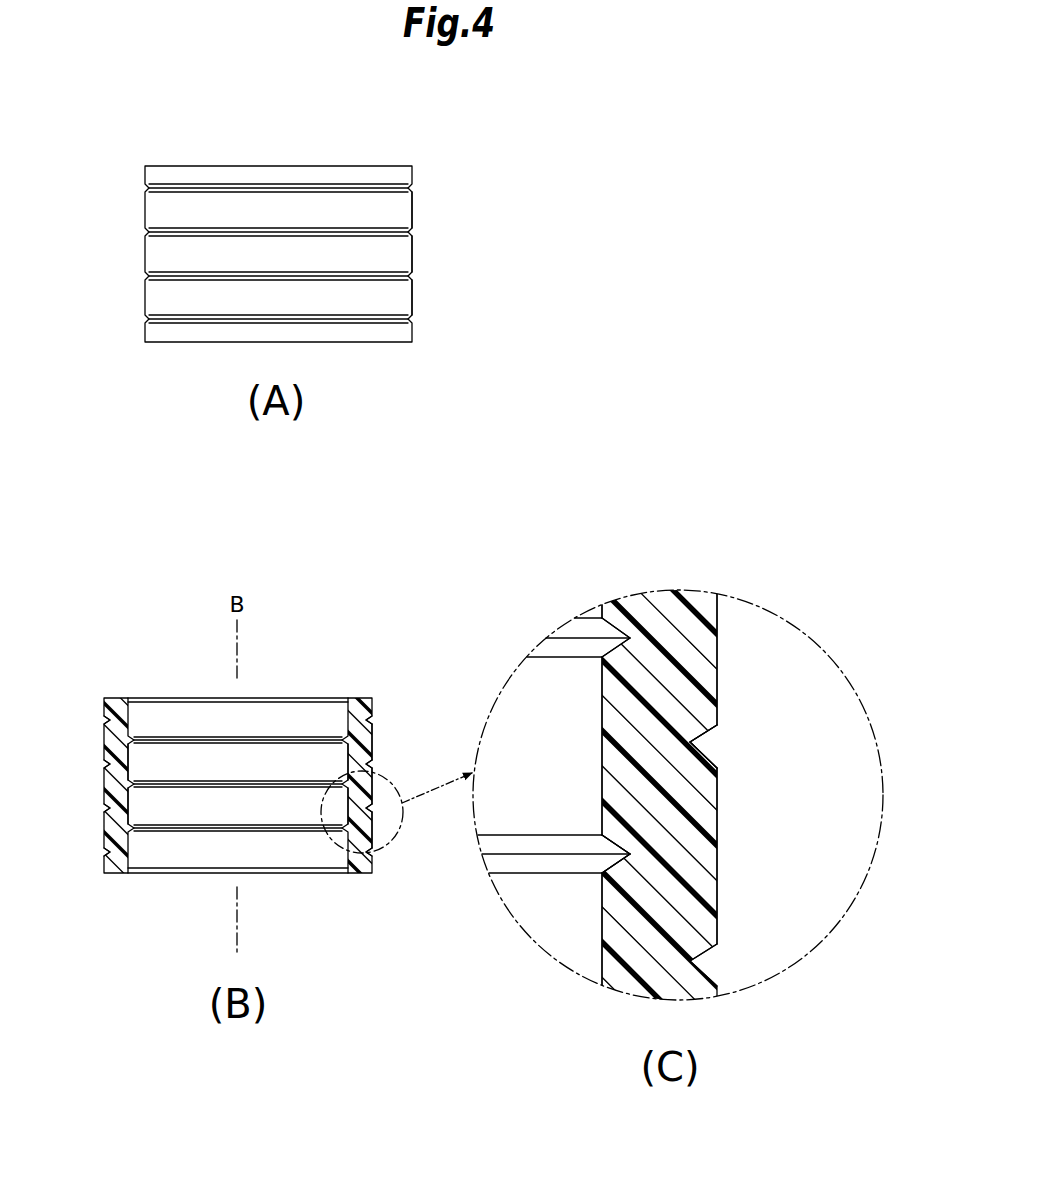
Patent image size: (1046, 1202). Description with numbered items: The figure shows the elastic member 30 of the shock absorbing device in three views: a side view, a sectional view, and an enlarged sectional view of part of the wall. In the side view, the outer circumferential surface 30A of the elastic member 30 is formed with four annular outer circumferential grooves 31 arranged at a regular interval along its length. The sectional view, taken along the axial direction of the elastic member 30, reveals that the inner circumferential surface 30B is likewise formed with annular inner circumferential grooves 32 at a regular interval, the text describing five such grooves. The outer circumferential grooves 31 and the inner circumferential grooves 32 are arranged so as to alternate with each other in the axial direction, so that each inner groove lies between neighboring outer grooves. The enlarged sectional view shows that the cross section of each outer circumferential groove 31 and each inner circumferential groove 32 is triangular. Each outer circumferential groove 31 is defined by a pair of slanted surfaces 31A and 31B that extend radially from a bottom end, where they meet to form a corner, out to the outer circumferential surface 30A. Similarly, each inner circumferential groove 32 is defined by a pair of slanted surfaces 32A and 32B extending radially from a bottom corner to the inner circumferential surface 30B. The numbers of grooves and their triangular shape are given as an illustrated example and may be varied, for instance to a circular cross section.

The elastic member 30 is at (358, 146).
The outer circumferential surface 30A is at (152, 303).
The inner circumferential surface 30B is at (293, 767).
The outer circumferential groove 31 is at (412, 319).
The slanted surface 31A is at (707, 740).
The slanted surface 31B is at (707, 756).
The inner circumferential groove 32 is at (173, 740).
The slanted surface 32A is at (606, 839).
The slanted surface 32B is at (590, 866).